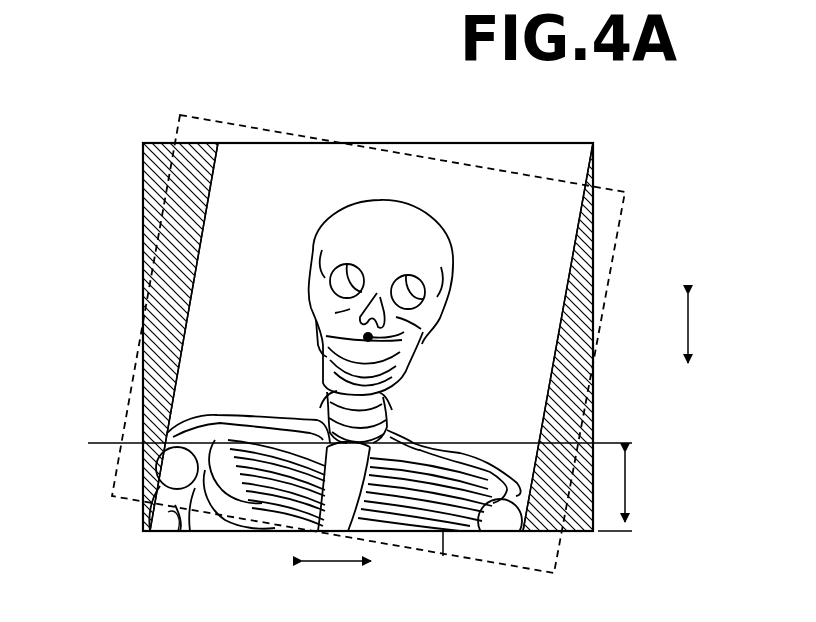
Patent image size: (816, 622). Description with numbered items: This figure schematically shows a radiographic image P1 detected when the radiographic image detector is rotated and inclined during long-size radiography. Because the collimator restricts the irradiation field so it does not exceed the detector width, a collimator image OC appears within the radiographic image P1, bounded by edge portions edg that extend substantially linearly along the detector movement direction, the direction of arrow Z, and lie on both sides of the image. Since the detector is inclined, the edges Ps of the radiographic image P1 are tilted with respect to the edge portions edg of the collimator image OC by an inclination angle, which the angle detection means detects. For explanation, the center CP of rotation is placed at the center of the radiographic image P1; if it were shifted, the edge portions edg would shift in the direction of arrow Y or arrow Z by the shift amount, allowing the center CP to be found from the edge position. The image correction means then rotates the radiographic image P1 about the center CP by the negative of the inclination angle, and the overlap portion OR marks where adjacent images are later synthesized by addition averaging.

The radiographic image P1 is at (427, 141).
The edge of the radiographic image Ps is at (143, 178).
The edge portion of the collimator image edg is at (212, 176).
The collimator image OC is at (160, 288).
The center of rotation CP is at (373, 338).
The overlap portion OR is at (378, 487).
The direction of arrow Y is at (340, 564).
The direction of arrow Z is at (690, 325).